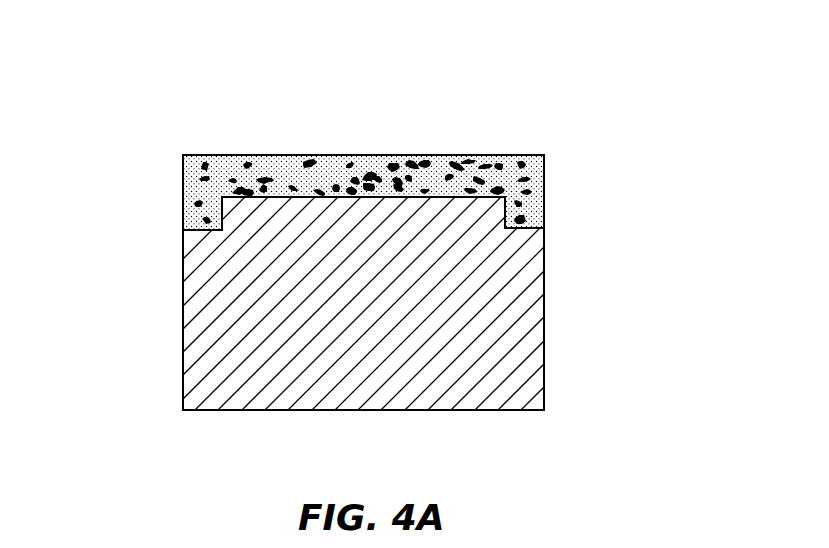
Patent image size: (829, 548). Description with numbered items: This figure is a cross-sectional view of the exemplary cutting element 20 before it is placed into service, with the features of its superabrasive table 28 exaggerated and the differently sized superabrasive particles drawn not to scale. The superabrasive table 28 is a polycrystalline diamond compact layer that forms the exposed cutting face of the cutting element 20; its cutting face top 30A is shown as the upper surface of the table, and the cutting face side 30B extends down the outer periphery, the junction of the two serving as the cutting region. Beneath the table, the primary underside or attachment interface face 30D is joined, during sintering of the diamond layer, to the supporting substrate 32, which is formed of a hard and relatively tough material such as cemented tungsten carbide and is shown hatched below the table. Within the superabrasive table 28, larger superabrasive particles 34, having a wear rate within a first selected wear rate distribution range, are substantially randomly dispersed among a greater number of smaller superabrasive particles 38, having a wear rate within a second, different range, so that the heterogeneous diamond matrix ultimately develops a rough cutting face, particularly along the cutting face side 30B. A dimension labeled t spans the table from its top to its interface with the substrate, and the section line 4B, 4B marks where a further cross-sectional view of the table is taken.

The cutting element 20 is at (588, 365).
The superabrasive table 28 is at (441, 140).
The cutting face top 30A is at (485, 155).
The cutting face side 30B is at (545, 212).
The interface face 30D is at (277, 197).
The substrate 32 is at (556, 265).
The larger superabrasive particles 34 is at (375, 157).
The smaller superabrasive particles 38 is at (518, 155).
The section line 4B— 4B is at (243, 155).
The coating thickness t is at (92, 206).